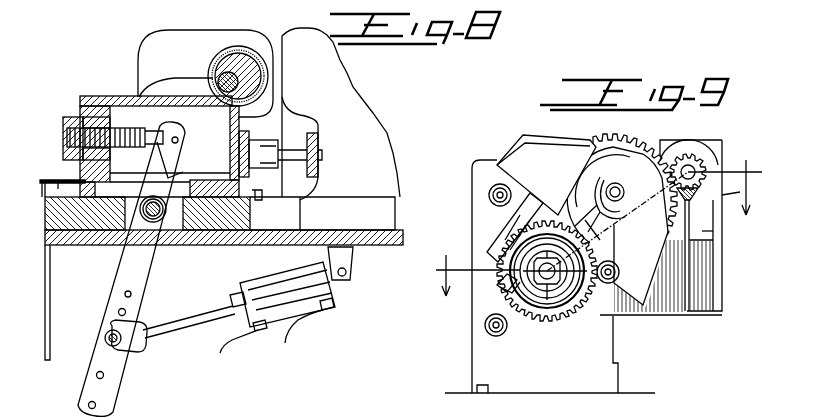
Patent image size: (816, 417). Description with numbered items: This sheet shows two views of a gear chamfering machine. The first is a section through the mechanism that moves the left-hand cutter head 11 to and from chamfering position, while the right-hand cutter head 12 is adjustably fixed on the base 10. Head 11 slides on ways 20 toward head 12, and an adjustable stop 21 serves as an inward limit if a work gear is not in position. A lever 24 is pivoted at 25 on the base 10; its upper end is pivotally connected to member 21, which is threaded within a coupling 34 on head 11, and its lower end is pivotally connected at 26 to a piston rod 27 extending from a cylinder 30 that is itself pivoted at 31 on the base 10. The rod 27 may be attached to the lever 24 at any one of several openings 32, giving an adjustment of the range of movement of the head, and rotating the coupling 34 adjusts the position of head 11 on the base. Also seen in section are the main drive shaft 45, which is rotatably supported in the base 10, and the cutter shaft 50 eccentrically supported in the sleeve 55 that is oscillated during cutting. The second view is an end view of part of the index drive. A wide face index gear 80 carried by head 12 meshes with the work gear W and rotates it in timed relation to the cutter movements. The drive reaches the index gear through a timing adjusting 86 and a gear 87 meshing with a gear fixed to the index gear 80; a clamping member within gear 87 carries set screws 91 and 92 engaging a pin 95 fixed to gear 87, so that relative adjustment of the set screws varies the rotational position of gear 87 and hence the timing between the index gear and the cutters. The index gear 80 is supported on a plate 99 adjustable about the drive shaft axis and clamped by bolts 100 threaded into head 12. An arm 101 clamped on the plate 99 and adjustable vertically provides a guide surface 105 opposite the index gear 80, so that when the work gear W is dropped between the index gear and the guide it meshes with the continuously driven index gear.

In FIG. 8, the base 10 is at (46, 210).
In FIG. 8, the cutter head 11 is at (130, 40).
In FIG. 9, the cutter head 11 is at (598, 242).
In FIG. 8, the cutter head 12 is at (365, 80).
In FIG. 8, the ways 20 is at (50, 180).
In FIG. 8, the adjustable stop 21 is at (116, 135).
In FIG. 8, the lever 24 is at (145, 265).
In FIG. 8, the pivot 25 is at (155, 222).
In FIG. 8, the pivotal connection 26 is at (105, 338).
In FIG. 8, the piston rod 27 is at (172, 316).
In FIG. 8, the cylinder 30 is at (278, 276).
In FIG. 8, the pivot 31 is at (348, 272).
In FIG. 8, the openings 32 is at (104, 375).
In FIG. 8, the coupling 34 is at (62, 132).
In FIG. 8, the main drive shaft 45 is at (298, 146).
In FIG. 8, the cutter shaft 50 is at (213, 70).
In FIG. 8, the sleeve 55 is at (244, 50).
In FIG. 9, the index gear 80 is at (616, 136).
In FIG. 9, the work gear W is at (685, 155).
In FIG. 9, the timing adjusting 86 is at (545, 320).
In FIG. 9, the gear 87 is at (624, 320).
In FIG. 9, the set screw 91 is at (520, 270).
In FIG. 9, the set screw 92 is at (510, 288).
In FIG. 9, the pin 95 is at (512, 284).
In FIG. 9, the plate 99 is at (623, 316).
In FIG. 9, the bolts 100 is at (488, 196).
In FIG. 9, the arm 101 is at (713, 231).
In FIG. 9, the guide surface 105 is at (728, 197).